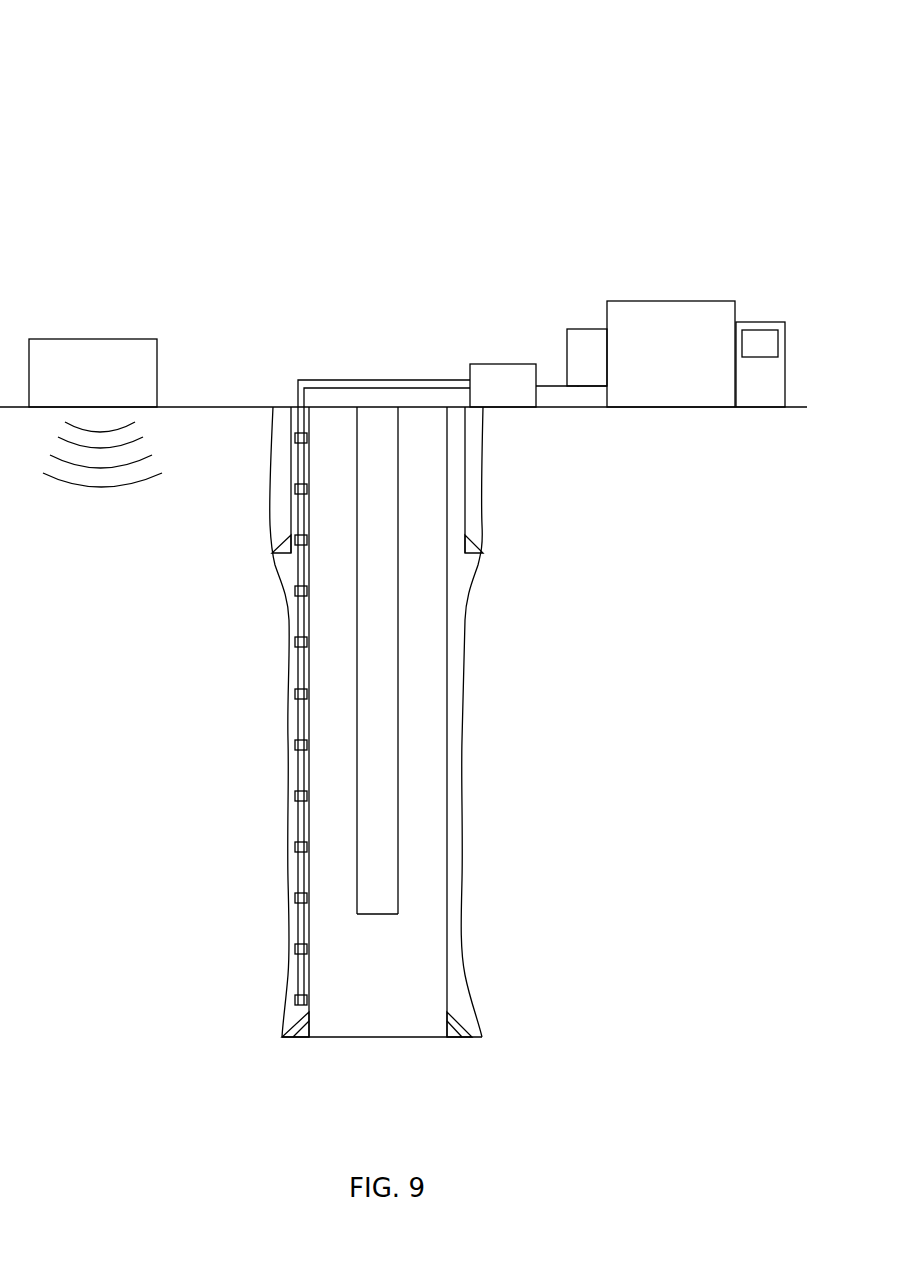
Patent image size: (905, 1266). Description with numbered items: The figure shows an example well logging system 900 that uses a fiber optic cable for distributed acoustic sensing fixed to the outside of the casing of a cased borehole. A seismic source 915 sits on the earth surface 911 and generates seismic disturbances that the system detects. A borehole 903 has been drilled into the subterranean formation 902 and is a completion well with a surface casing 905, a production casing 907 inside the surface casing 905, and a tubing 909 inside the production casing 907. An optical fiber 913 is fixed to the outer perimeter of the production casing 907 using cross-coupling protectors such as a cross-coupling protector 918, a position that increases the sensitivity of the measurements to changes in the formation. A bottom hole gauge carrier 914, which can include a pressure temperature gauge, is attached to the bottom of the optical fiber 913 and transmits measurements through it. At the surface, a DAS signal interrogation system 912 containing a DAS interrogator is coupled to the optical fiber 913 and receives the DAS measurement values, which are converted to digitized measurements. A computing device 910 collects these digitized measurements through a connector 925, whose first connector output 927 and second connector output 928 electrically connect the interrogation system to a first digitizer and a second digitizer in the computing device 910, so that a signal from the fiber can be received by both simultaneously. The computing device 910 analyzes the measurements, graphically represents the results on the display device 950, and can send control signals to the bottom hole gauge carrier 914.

The well logging system 900 is at (116, 87).
The subterranean formation 902 is at (403, 472).
The borehole 903 is at (285, 637).
The surface casing 905 is at (467, 492).
The production casing 907 is at (448, 607).
The tubing 909 is at (400, 667).
The computing device 910 is at (671, 354).
The earth surface 911 is at (190, 405).
The DAS signal interrogation system 912 is at (503, 385).
The optical fiber 913 is at (302, 562).
The bottom hole gauge carrier 914 is at (292, 1008).
The seismic source 915 is at (95, 413).
The cross-coupling protector 918 is at (402, 768).
The connector 925 is at (548, 386).
The first connector output 927 is at (578, 386).
The second connector output 928 is at (598, 329).
The display device 950 is at (765, 322).